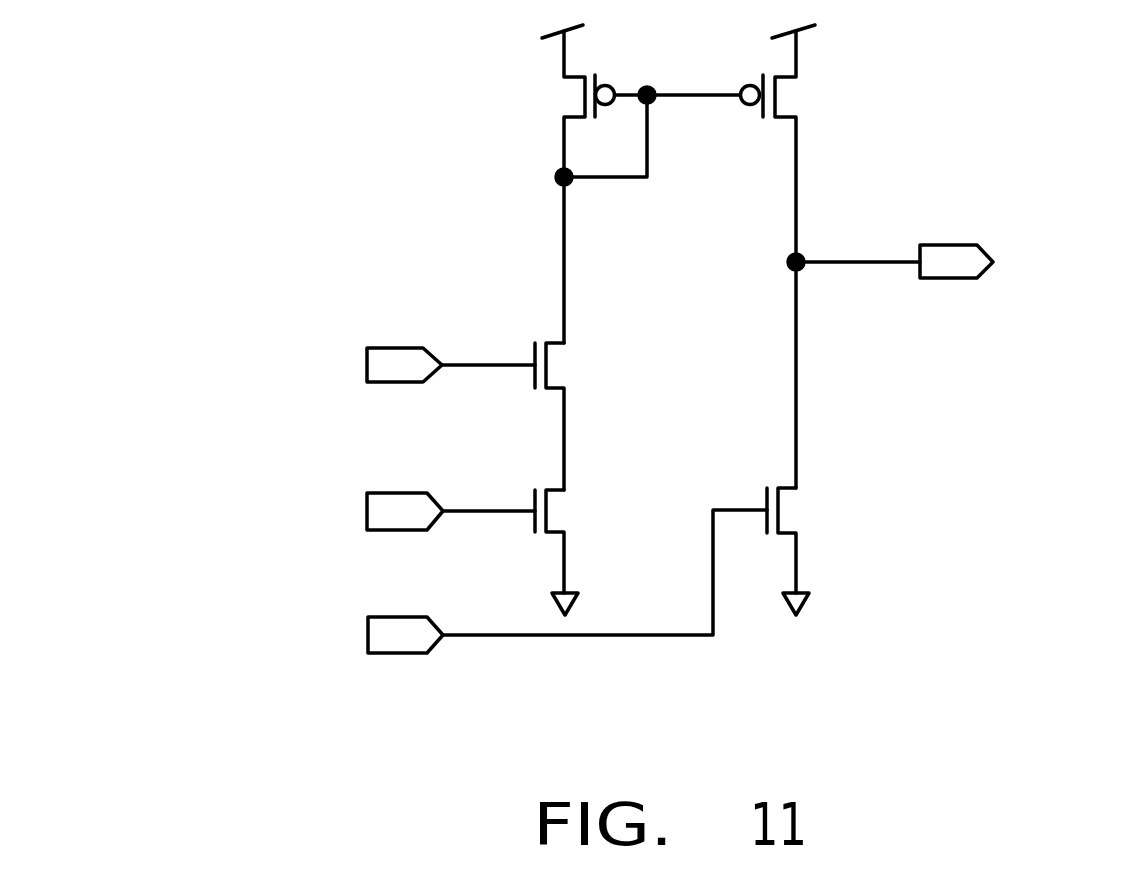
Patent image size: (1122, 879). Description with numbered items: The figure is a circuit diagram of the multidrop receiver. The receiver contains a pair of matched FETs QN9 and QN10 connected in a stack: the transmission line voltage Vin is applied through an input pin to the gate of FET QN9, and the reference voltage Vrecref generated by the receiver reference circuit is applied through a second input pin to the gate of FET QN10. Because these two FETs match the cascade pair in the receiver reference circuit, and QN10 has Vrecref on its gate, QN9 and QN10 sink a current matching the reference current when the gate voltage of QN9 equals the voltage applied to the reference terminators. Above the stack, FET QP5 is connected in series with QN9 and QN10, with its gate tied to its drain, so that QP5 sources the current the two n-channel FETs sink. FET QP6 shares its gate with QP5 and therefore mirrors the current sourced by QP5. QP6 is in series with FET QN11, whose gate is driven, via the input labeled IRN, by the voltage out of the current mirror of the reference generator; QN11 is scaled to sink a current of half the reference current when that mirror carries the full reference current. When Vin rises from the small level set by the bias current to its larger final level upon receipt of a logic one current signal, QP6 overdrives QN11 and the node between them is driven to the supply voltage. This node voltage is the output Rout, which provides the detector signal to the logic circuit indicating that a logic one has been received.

The FET QP5 is at (558, 101).
The FET QP6 is at (813, 143).
The FET QN9 is at (596, 406).
The FET QN10 is at (609, 541).
The FET QN11 is at (848, 542).
The transmission line voltage Vin is at (404, 355).
The reference voltage Vrecref is at (349, 503).
The output Rout is at (950, 271).
The current input terminal IRN is at (523, 584).